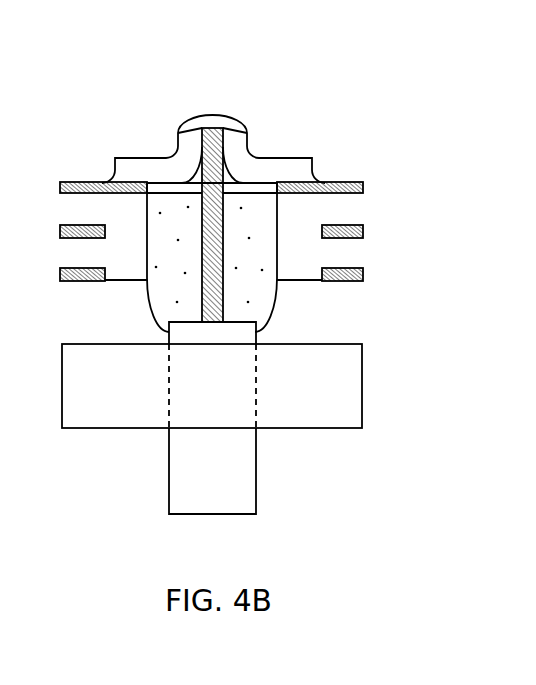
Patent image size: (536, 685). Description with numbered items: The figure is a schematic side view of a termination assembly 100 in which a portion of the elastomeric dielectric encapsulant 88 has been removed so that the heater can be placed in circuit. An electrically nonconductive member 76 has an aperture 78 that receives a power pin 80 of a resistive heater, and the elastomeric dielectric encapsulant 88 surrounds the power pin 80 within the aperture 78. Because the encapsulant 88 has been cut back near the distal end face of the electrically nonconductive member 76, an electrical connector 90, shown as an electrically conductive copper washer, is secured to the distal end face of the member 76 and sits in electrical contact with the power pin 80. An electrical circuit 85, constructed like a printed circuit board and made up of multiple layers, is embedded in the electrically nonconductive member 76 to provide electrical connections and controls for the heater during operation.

The termination assembly 100 is at (107, 72).
The power pin 80 is at (215, 128).
The electrical connector 90 is at (162, 165).
The elastomeric dielectric encapsulant 88 is at (262, 210).
The aperture 78 is at (165, 290).
The electrically nonconductive member 76 is at (73, 210).
The electrical circuit 85 is at (350, 185).